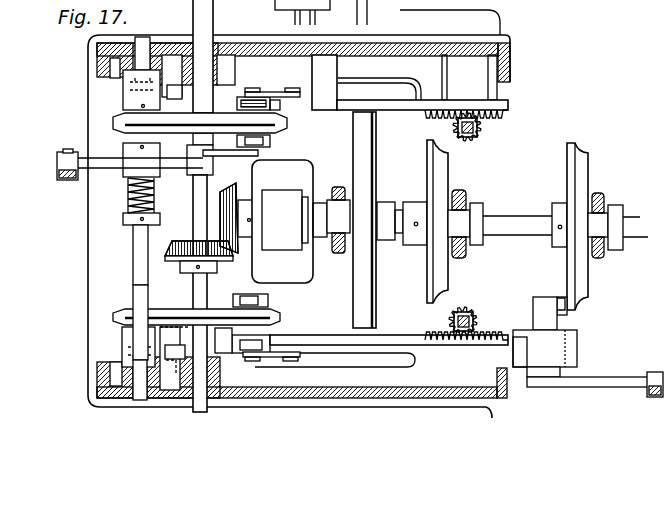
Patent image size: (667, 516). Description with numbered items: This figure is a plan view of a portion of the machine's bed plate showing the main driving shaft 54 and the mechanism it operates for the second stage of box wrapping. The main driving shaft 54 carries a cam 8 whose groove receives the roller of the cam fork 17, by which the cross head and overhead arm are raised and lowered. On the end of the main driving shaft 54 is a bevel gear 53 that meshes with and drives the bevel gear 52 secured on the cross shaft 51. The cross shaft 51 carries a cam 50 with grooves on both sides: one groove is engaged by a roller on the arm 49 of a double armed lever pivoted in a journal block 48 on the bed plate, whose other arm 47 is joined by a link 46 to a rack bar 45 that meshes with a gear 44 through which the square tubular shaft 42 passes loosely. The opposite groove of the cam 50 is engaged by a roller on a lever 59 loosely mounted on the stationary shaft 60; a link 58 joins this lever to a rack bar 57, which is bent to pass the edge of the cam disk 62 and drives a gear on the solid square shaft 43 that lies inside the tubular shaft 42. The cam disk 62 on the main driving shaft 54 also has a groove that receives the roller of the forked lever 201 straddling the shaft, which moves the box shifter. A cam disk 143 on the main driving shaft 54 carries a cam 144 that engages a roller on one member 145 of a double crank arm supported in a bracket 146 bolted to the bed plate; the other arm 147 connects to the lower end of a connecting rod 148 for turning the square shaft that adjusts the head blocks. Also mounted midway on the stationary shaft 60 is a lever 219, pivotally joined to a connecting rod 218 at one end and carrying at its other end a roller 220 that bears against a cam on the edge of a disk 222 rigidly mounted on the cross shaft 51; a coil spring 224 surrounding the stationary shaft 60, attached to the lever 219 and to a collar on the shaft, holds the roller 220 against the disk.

The cam 8 is at (440, 171).
The cam fork 17 is at (463, 258).
The square tubular shaft 42 is at (482, 129).
The solid square shaft 43 is at (471, 138).
The gear 44 is at (455, 128).
The rack bar 45 is at (401, 108).
The link 46 is at (273, 92).
The arm 47 is at (235, 98).
The journal block 48 is at (288, 118).
The arm 49 is at (271, 141).
The cam 50 is at (113, 122).
The cross shaft 51 is at (193, 286).
The bevel gear 52 is at (140, 246).
The bevel gear 53 is at (238, 250).
The main driving shaft 54 is at (506, 222).
The rack bar 57 is at (376, 81).
The link 58 is at (170, 84).
The lever 59 is at (125, 94).
The stationary shaft 60 is at (135, 280).
The cam disk 62 is at (377, 172).
The cam disk 143 is at (572, 143).
The cam 144 is at (560, 300).
The member of double crank arm 145 is at (538, 313).
The bracket 146 is at (548, 349).
The arm 147 is at (576, 388).
The connecting rod 148 is at (656, 398).
The forked lever 201 is at (340, 251).
The connecting rod 218 is at (63, 179).
The lever 219 is at (101, 167).
The roller 220 is at (225, 157).
The disk 222 is at (262, 153).
The coil spring 224 is at (128, 194).